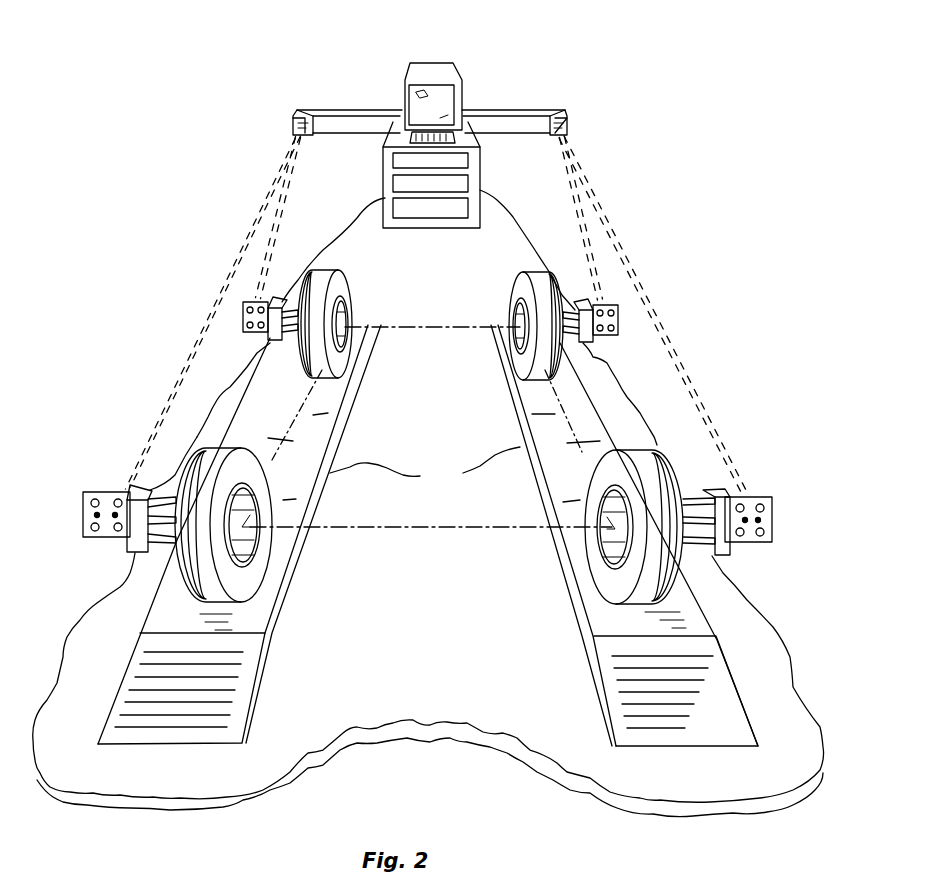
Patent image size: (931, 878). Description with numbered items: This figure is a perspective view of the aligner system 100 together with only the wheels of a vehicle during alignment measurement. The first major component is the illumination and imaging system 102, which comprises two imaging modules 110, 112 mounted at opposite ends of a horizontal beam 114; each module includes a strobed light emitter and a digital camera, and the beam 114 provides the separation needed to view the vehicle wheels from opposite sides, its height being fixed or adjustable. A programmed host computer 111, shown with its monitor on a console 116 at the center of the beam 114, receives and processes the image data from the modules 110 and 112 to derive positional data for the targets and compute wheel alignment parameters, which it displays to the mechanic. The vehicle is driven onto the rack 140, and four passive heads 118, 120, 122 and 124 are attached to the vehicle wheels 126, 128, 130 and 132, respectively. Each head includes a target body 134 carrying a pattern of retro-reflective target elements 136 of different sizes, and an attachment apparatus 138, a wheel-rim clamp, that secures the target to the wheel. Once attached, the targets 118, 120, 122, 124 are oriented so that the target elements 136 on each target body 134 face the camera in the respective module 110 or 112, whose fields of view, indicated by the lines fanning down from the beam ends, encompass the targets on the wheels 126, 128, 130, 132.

The aligner system 100 is at (758, 272).
The illumination and imaging system 102 is at (535, 73).
The imaging module 110 is at (292, 118).
The computer 111 is at (437, 70).
The imaging module 112 is at (569, 118).
The horizontal beam 114 is at (380, 108).
The computer console 116 is at (364, 243).
The passive head (target) 118 is at (240, 317).
The passive head (target) 120 is at (95, 490).
The passive head (target) 122 is at (625, 302).
The passive head (target) 124 is at (749, 507).
The vehicle wheel 126 is at (350, 356).
The vehicle wheel 128 is at (262, 568).
The vehicle wheel 130 is at (512, 367).
The vehicle wheel 132 is at (600, 570).
The target body 134 is at (757, 496).
The target elements 136 is at (768, 531).
The attachment apparatus 138 is at (710, 487).
The rack 140 is at (425, 469).